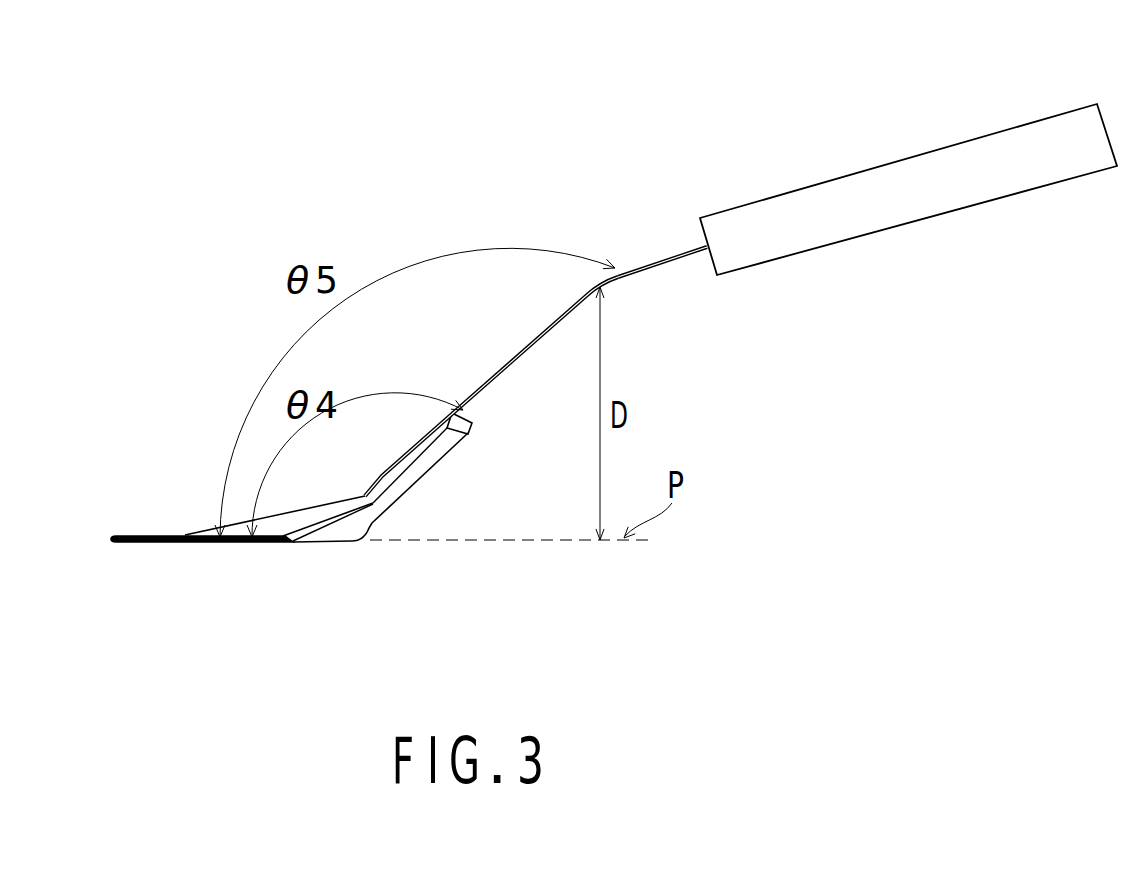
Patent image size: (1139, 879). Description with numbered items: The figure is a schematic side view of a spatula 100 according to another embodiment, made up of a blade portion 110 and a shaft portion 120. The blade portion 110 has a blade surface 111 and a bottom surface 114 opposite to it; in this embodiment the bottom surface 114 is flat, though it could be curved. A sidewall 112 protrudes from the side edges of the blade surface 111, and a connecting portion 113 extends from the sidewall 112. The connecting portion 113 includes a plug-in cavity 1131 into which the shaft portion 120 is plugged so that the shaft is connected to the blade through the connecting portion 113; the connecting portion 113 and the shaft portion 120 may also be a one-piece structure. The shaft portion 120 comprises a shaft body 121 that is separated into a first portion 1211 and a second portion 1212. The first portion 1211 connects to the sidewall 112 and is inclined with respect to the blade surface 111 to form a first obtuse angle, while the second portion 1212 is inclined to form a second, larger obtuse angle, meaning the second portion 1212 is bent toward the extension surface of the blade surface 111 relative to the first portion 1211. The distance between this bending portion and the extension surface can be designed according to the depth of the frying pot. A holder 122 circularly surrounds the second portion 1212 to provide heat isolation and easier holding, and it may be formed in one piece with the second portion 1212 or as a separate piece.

The spatula 100 is at (140, 120).
The blade portion 110 is at (292, 562).
The blade surface 111 is at (160, 537).
The sidewall 112 is at (338, 533).
The connecting portion 113 is at (437, 453).
The plug-in cavity 1131 is at (473, 427).
The bottom surface 114 is at (158, 542).
The shaft portion 120 is at (790, 76).
The shaft body 121 is at (708, 124).
The first portion 1211 is at (616, 271).
The second portion 1212 is at (675, 250).
The holder 122 is at (770, 212).